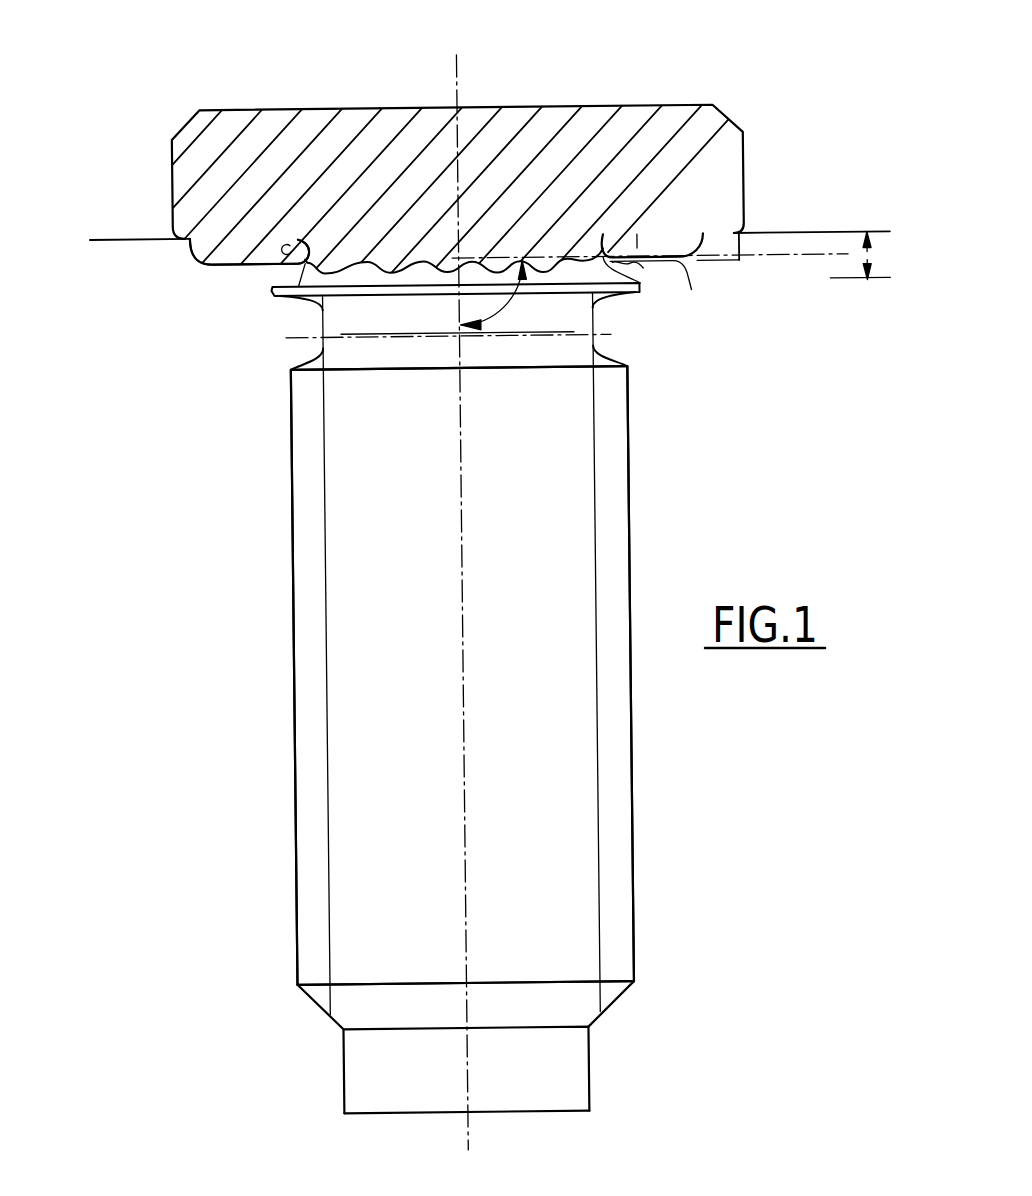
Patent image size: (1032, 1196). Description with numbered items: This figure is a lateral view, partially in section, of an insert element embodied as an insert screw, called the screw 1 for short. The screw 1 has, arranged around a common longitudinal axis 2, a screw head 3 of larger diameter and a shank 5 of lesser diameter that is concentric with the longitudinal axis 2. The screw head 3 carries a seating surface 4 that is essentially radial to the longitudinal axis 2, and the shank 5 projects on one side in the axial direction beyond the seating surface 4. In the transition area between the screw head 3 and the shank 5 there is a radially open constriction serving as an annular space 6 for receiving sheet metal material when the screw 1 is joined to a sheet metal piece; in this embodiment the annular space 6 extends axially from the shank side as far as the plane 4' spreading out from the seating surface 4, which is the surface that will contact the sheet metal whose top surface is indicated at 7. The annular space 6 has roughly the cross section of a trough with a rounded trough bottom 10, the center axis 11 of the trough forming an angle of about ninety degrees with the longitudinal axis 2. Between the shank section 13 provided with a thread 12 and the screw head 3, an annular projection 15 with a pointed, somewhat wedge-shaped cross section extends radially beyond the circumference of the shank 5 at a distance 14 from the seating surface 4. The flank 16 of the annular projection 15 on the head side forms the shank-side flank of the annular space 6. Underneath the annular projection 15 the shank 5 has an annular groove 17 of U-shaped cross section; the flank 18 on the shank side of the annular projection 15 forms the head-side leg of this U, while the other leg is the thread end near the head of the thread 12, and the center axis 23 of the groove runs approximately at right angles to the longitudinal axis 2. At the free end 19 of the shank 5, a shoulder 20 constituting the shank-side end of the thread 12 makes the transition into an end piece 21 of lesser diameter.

The screw 1 is at (385, 580).
The longitudinal axis 2 is at (458, 65).
The screw head 3 is at (664, 123).
The seating surface 4 is at (674, 295).
The plane 4' is at (812, 184).
The shank 5 is at (550, 578).
The annular space 6 is at (287, 253).
The plate surface 7 is at (227, 274).
The trough bottom 10 is at (289, 247).
The center axis 11 is at (774, 258).
The thread 12 is at (610, 533).
The shank section 13 is at (292, 518).
The distance 14 is at (871, 256).
The annular projection 15 is at (273, 293).
The flank 16 is at (277, 284).
The annular groove 17 is at (609, 318).
The flank 18 is at (304, 305).
The free end 19 is at (610, 1050).
The shoulder 20 is at (612, 1005).
The end piece 21 is at (533, 1086).
The center axis 23 is at (408, 334).